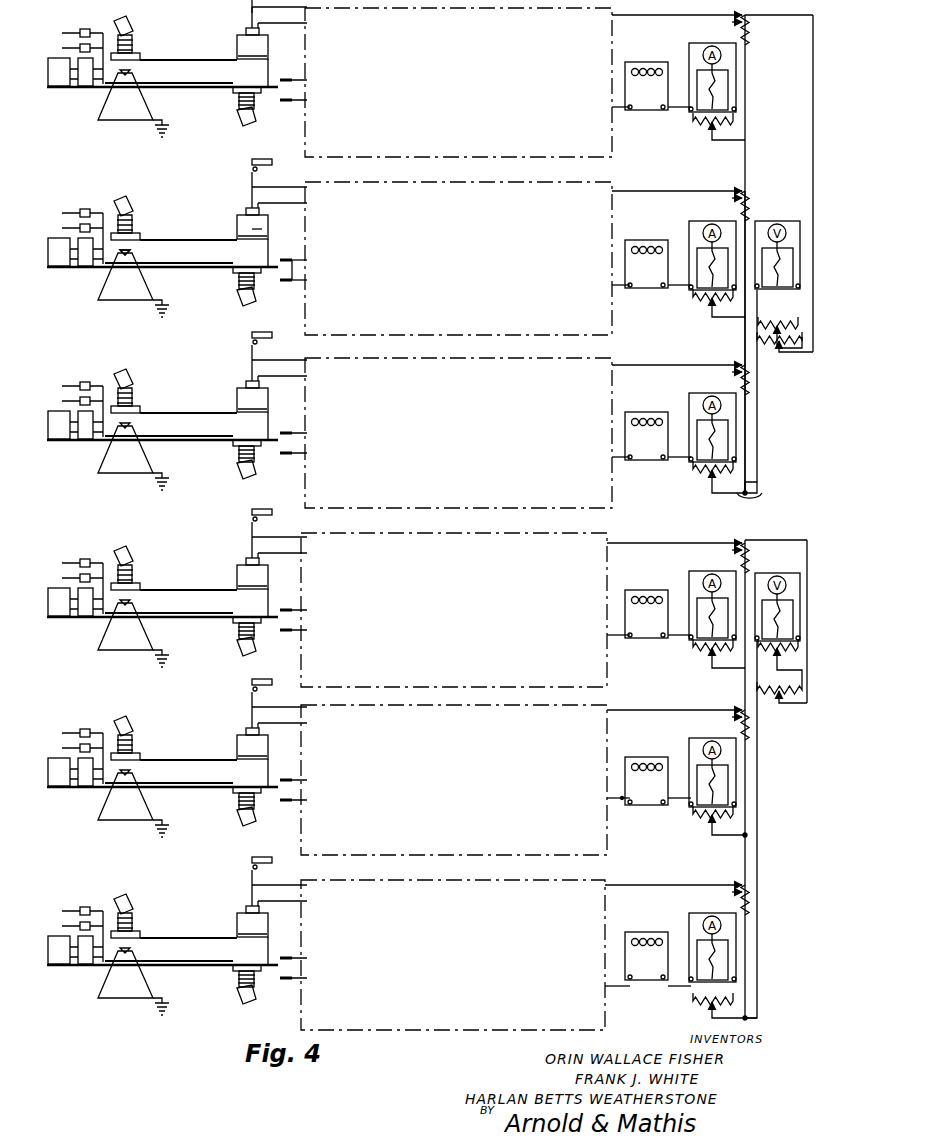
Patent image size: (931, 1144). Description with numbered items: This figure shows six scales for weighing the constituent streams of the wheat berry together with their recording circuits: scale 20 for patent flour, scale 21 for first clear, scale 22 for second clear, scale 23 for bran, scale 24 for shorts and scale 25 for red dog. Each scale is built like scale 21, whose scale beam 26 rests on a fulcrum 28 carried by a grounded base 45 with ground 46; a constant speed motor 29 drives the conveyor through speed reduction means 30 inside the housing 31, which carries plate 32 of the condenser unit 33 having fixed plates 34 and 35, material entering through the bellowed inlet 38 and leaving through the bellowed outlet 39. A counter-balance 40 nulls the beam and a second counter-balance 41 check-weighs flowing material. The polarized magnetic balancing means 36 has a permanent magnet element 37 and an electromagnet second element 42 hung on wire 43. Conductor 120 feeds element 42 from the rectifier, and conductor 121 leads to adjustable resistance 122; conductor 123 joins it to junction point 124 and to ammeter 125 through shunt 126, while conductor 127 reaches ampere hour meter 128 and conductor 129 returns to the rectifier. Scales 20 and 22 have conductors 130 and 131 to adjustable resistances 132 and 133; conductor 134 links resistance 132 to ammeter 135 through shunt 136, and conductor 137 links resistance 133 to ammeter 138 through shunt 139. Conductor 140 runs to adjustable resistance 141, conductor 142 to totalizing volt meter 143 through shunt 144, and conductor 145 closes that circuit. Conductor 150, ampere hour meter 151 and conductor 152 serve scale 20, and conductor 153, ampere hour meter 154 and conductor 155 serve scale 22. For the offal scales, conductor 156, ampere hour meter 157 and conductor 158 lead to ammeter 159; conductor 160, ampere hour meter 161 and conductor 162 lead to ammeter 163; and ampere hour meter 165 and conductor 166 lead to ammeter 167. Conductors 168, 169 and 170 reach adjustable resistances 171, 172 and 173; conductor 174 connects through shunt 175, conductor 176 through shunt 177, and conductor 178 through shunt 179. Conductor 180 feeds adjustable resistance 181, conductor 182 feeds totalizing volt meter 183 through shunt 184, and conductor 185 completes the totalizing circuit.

The scale 20 is at (177, 68).
The scale 21 is at (183, 244).
The scale 22 is at (177, 411).
The scale 23 is at (177, 588).
The scale 24 is at (177, 758).
The scale 25 is at (177, 936).
The scale beam 26 is at (220, 298).
The fulcrum 28 is at (122, 271).
The constant speed motor 29 is at (61, 263).
The speed reduction means 30 is at (89, 263).
The housing 31 is at (162, 265).
The plate 32 is at (256, 284).
The condenser unit 33 is at (313, 270).
The plate 34 is at (303, 252).
The plate 35 is at (292, 300).
The polarized magnetic balancing means 36 is at (276, 226).
The element 37 is at (264, 241).
The bellowed inlet 38 is at (125, 211).
The bellowed outlet 39 is at (246, 308).
The counter-balance 40 is at (67, 238).
The second counter-balance 41 is at (82, 201).
The second element 42 is at (246, 233).
The wire 43 is at (247, 181).
The base 45 is at (117, 285).
The ground 46 is at (147, 313).
The conductor 120 is at (279, 195).
The conductor 121 is at (672, 191).
The adjustable resistance 122 is at (752, 196).
The conductor 123 is at (750, 224).
The junction point 124 is at (743, 318).
The ammeter 125 is at (712, 219).
The shunt 126 is at (705, 299).
The conductor 127 is at (668, 290).
The ampere hour meter 128 is at (645, 290).
The conductor 129 is at (617, 283).
The conductor 130 is at (656, 15).
The conductor 131 is at (664, 365).
The adjustable resistance 132 is at (752, 32).
The adjustable resistance 133 is at (757, 390).
The conductor 134 is at (749, 80).
The ammeter 135 is at (706, 34).
The shunt 136 is at (707, 123).
The conductor 137 is at (759, 489).
The ammeter 138 is at (704, 388).
The shunt 139 is at (702, 482).
The conductor 140 is at (813, 118).
The adjustable resistance 141 is at (758, 372).
The conductor 142 is at (790, 345).
The totalizing volt meter 143 is at (779, 219).
The shunt 144 is at (760, 352).
The conductor 145 is at (758, 445).
The conductor 150 is at (632, 113).
The ampere hour meter 151 is at (651, 110).
The conductor 152 is at (675, 109).
The conductor 153 is at (618, 458).
The ampere hour meter 154 is at (647, 463).
The conductor 155 is at (678, 460).
The conductor 156 is at (620, 637).
The ampere hour meter 157 is at (648, 640).
The conductor 158 is at (680, 637).
The ammeter 159 is at (704, 569).
The conductor 160 is at (614, 803).
The ampere hour meter 161 is at (645, 808).
The conductor 162 is at (676, 800).
The ammeter 163 is at (692, 731).
The ampere hour meter 165 is at (636, 996).
The conductor 166 is at (673, 988).
The ammeter 167 is at (692, 915).
The conductor 168 is at (642, 543).
The conductor 169 is at (638, 710).
The conductor 170 is at (645, 880).
The adjustable resistance 171 is at (766, 542).
The adjustable resistance 172 is at (740, 722).
The adjustable resistance 173 is at (742, 898).
The conductor 174 is at (748, 578).
The shunt 175 is at (700, 659).
The conductor 176 is at (738, 826).
The shunt 177 is at (698, 824).
The conductor 178 is at (732, 1018).
The shunt 179 is at (697, 1012).
The conductor 180 is at (803, 540).
The adjustable resistance 181 is at (770, 701).
The conductor 182 is at (775, 690).
The totalizing volt meter 183 is at (777, 571).
The shunt 184 is at (770, 662).
The conductor 185 is at (758, 760).